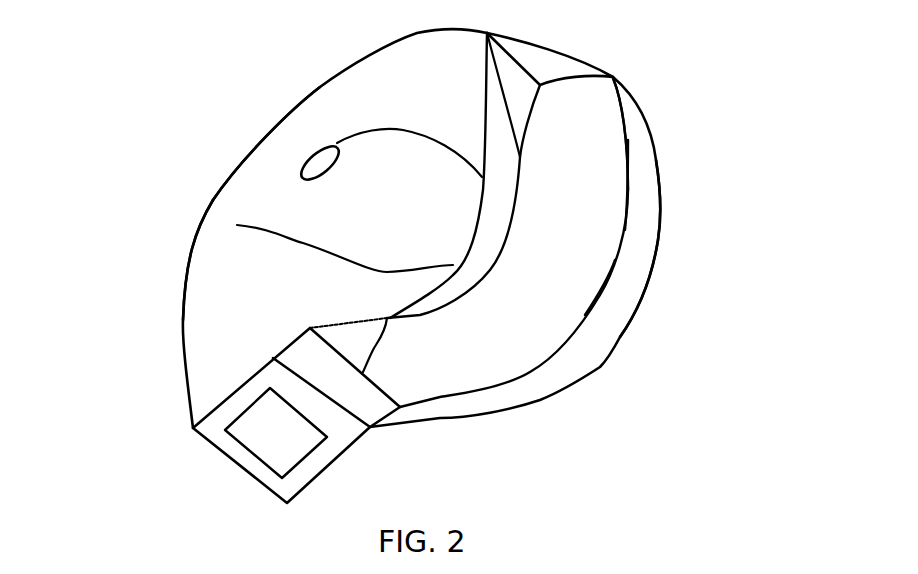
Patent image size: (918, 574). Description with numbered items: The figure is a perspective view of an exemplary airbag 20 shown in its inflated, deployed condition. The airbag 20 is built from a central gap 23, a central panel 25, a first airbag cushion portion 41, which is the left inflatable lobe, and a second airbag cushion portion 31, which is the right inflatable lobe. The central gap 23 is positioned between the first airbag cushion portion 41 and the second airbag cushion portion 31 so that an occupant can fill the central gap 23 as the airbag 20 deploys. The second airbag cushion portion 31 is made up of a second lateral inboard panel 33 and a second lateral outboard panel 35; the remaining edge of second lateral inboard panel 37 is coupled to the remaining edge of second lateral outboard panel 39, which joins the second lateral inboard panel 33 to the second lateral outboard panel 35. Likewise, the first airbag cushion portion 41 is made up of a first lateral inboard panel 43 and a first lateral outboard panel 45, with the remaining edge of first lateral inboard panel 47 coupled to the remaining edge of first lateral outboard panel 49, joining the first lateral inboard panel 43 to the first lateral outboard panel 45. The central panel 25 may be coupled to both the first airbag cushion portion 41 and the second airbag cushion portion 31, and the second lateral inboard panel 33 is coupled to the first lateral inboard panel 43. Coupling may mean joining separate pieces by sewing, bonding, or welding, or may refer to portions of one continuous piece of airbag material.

The airbag 20 is at (144, 422).
The central gap 23 is at (492, 353).
The central panel 25 is at (545, 63).
The second airbag cushion portion 31 is at (642, 393).
The second lateral inboard panel 33 is at (577, 128).
The second lateral outboard panel 35 is at (633, 232).
The remaining edge of second lateral inboard panel 37 is at (620, 165).
The remaining edge of second lateral outboard panel 39 is at (600, 267).
The first airbag cushion portion 41 is at (192, 147).
The first lateral inboard panel 43 is at (500, 147).
The first lateral outboard panel 45 is at (250, 310).
The remaining edge of first lateral inboard panel 47 is at (334, 142).
The remaining edge of first lateral outboard panel 49 is at (237, 225).